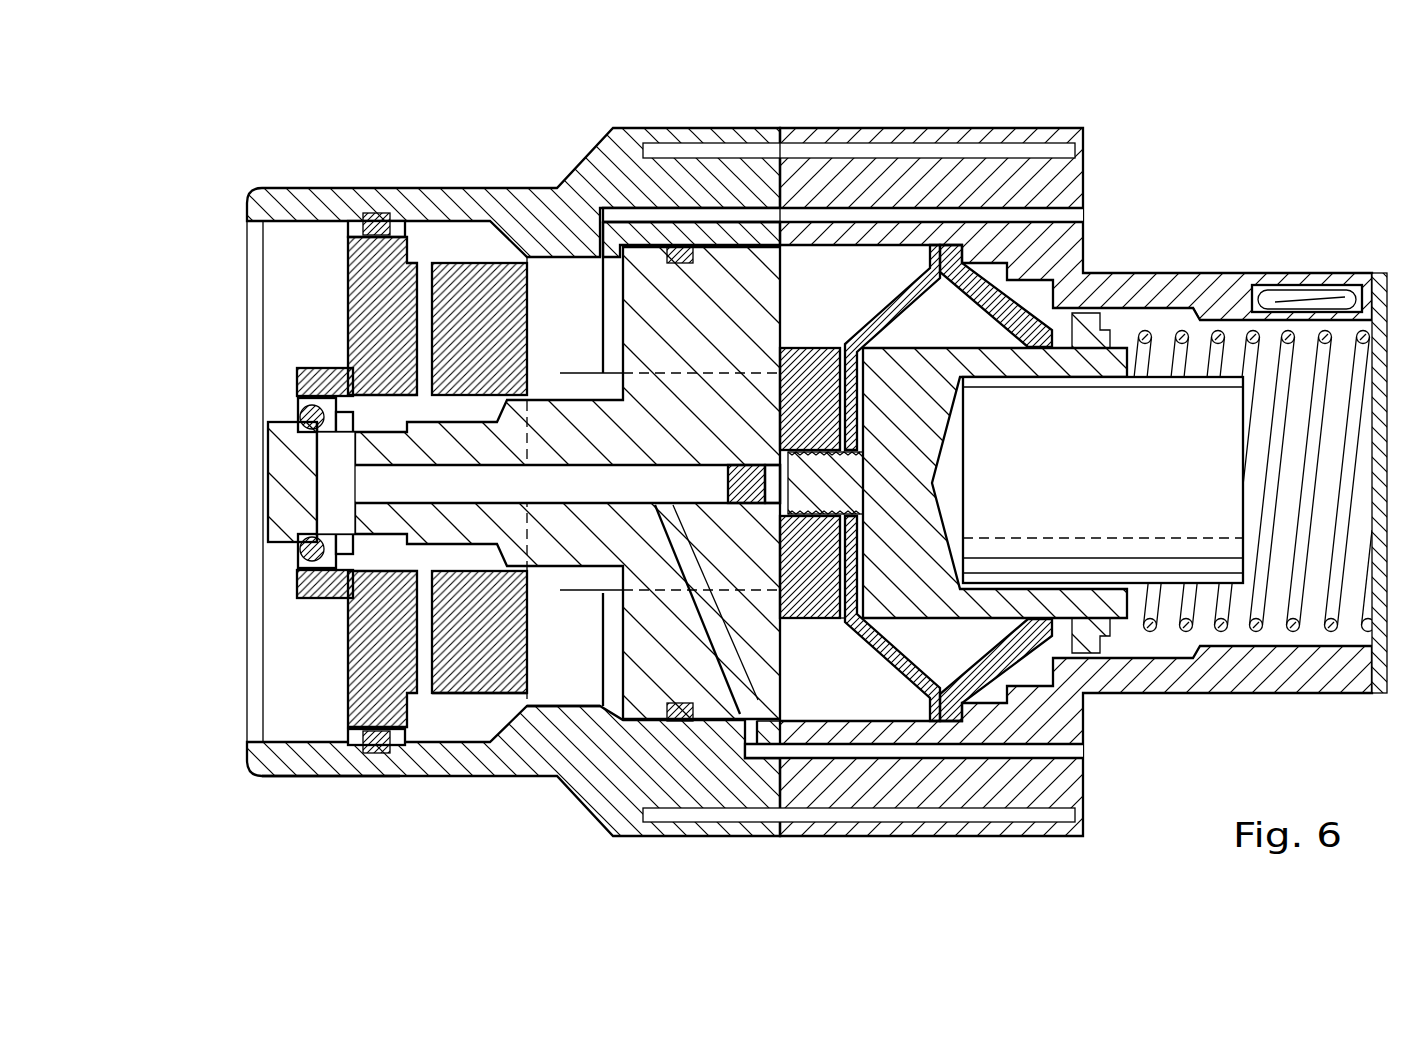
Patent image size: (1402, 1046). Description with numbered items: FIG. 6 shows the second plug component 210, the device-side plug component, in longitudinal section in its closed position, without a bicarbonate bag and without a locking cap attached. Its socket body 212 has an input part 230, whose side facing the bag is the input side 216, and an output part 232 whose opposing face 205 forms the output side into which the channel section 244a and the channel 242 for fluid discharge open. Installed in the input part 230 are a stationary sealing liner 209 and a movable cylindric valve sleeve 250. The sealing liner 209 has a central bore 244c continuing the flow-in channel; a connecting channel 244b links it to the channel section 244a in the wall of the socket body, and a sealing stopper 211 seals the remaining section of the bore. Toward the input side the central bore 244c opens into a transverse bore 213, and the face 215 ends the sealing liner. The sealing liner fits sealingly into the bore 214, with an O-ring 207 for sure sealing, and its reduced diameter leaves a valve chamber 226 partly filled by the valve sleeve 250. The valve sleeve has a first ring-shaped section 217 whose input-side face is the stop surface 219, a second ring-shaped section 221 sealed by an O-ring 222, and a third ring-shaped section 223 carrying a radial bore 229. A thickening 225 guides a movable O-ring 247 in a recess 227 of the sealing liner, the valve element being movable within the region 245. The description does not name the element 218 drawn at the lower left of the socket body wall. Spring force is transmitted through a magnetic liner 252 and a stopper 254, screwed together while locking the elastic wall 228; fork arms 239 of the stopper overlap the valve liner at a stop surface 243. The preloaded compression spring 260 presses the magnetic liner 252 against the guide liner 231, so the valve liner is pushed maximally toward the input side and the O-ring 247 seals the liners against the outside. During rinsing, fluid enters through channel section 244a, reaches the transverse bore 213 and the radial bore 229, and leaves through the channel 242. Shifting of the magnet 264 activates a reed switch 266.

The face 205 is at (1090, 178).
The O-ring 207 is at (690, 640).
The sealing liner 209 is at (740, 665).
The second plug component 210 is at (350, 100).
The sealing stopper 211 is at (728, 492).
The socket body 212 is at (778, 116).
The transverse bore 213 is at (330, 512).
The bore 214 is at (640, 262).
The face 215 is at (300, 497).
The input side 216 is at (147, 494).
The first ring-shaped section 217 is at (320, 362).
The housing bottom wall 218 is at (290, 740).
The stop surface 219 is at (300, 380).
The ring-shaped section 221 is at (352, 632).
The O-ring 222 is at (380, 735).
The third ring-shaped section 223 is at (467, 275).
The thickening 225 is at (310, 568).
The valve chamber 226 is at (590, 700).
The recess 227 is at (395, 533).
The elastic wall 228 is at (883, 653).
The radial bore 229 is at (425, 695).
The input part 230 is at (580, 126).
The guide liner 231 is at (993, 690).
The output part 232 is at (967, 116).
The fork arms 239 is at (572, 385).
The channel 242 is at (1040, 216).
The stop surface 243 is at (540, 566).
The channel section 244a is at (1060, 751).
The connecting channel 244b is at (808, 640).
The central bore 244c is at (573, 483).
The region 245 is at (352, 338).
The O-ring 247 is at (300, 412).
The valve sleeve 250 is at (470, 695).
The magnetic liner 252 is at (915, 430).
The stopper 254 is at (808, 385).
The compression spring 260 is at (1210, 318).
The magnet 264 is at (1228, 512).
The reed switch 266 is at (1322, 290).